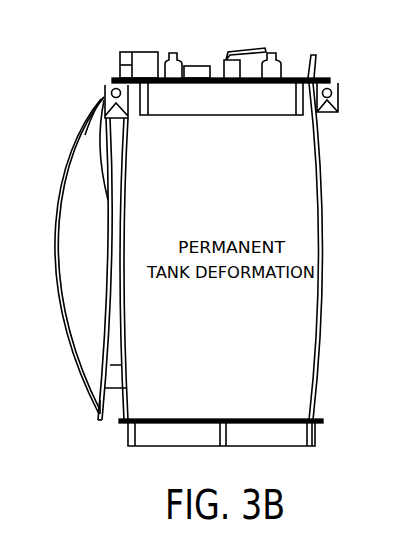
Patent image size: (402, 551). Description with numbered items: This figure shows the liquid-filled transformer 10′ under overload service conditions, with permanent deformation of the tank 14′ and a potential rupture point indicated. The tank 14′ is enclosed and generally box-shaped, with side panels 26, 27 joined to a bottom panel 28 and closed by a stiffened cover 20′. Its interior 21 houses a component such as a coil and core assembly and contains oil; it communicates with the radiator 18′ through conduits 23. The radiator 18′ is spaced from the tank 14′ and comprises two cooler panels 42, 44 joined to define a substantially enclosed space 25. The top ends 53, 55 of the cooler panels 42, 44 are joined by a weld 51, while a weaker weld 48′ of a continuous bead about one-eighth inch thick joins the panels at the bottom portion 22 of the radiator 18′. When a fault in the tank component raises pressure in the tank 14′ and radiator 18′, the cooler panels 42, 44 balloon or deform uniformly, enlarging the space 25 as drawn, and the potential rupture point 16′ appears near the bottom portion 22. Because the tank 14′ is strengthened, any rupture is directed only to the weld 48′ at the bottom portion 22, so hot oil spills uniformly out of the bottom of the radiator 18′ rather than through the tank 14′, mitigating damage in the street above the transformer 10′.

The liquid-filled transformer 10′ is at (346, 72).
The cover 20′ is at (290, 78).
The weld 51 is at (103, 98).
The top end of cooler panel 55 is at (99, 103).
The top end of cooler panel 53 is at (102, 160).
The conduits 23 is at (123, 148).
The cooler panel 42 is at (110, 200).
The enclosed space 25 is at (97, 263).
The cooler panel 44 is at (52, 282).
The side panel 26 is at (122, 214).
The interior of the tank 21 is at (235, 220).
The side panel 27 is at (322, 196).
The tank 14′ is at (327, 243).
The potential rupture point 16′ is at (106, 400).
The radiator 18′ is at (60, 405).
The bottom portion of the radiator 22 is at (100, 410).
The weaker weld 48′ is at (106, 426).
The bottom panel 28 is at (170, 418).